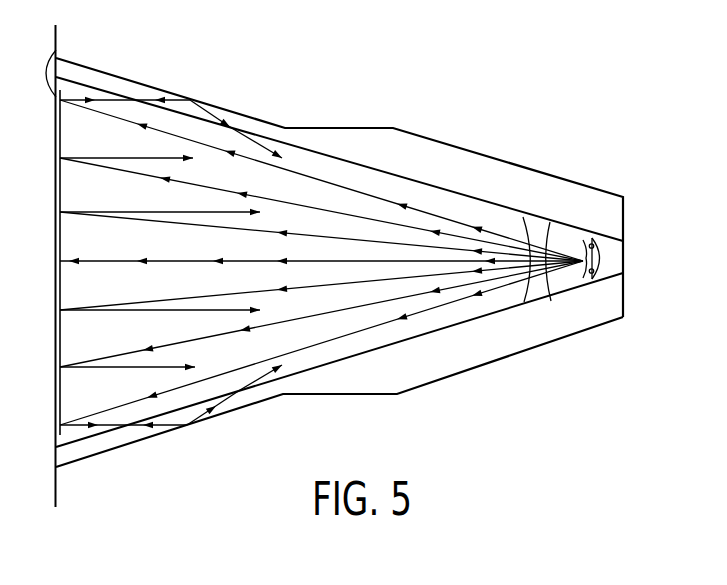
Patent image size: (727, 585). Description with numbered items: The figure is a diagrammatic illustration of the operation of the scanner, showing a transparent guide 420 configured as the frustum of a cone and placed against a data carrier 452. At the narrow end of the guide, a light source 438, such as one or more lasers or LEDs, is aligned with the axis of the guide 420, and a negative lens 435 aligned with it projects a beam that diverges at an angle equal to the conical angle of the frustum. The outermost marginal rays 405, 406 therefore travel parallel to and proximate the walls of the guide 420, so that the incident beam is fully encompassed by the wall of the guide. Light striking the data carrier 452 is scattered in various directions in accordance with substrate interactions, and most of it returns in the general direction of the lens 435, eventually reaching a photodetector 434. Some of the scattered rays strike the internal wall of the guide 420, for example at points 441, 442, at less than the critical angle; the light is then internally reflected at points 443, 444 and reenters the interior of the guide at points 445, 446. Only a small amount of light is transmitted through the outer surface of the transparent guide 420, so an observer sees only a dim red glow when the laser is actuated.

The data carrier 452 is at (58, 48).
The transparent guide 420 is at (70, 76).
The point 442 is at (130, 99).
The point 444 is at (192, 100).
The point 446 is at (240, 129).
The marginal ray 406 is at (297, 173).
The marginal ray 405 is at (385, 323).
The negative lens 435 is at (538, 230).
The light source 438 is at (583, 240).
The photodetector 434 is at (580, 283).
The point 441 is at (133, 426).
The point 443 is at (188, 426).
The point 445 is at (243, 391).